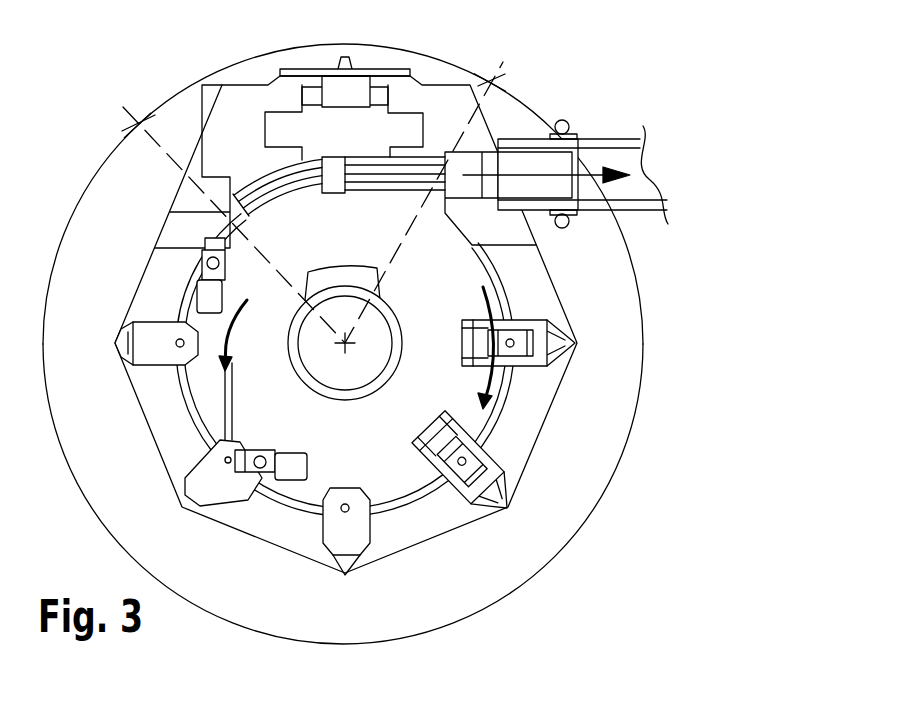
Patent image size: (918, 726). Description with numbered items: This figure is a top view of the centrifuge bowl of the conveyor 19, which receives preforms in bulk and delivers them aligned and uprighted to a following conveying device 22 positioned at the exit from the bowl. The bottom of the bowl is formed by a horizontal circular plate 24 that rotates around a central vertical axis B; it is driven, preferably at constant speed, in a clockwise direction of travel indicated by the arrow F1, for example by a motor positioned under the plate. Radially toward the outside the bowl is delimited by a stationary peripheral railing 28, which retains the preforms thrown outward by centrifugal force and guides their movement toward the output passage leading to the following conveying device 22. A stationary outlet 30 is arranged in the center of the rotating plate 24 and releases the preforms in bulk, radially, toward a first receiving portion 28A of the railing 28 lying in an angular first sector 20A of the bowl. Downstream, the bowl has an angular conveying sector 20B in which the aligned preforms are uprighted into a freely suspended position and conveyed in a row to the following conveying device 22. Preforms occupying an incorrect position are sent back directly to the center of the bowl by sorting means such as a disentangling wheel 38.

The conveyor 19 is at (373, 605).
The angular first sector 20A is at (322, 46).
The angular conveying sector 20B is at (535, 575).
The following conveying device 22 is at (616, 141).
The horizontal circular plate 24 is at (333, 470).
The stationary peripheral railing 28 is at (415, 505).
The first receiving portion 28A is at (338, 206).
The stationary outlet 30 is at (379, 271).
The disentangling wheel 38 is at (228, 265).
The central vertical axis B is at (350, 347).
The arrow indicating direction of travel F1 is at (512, 298).